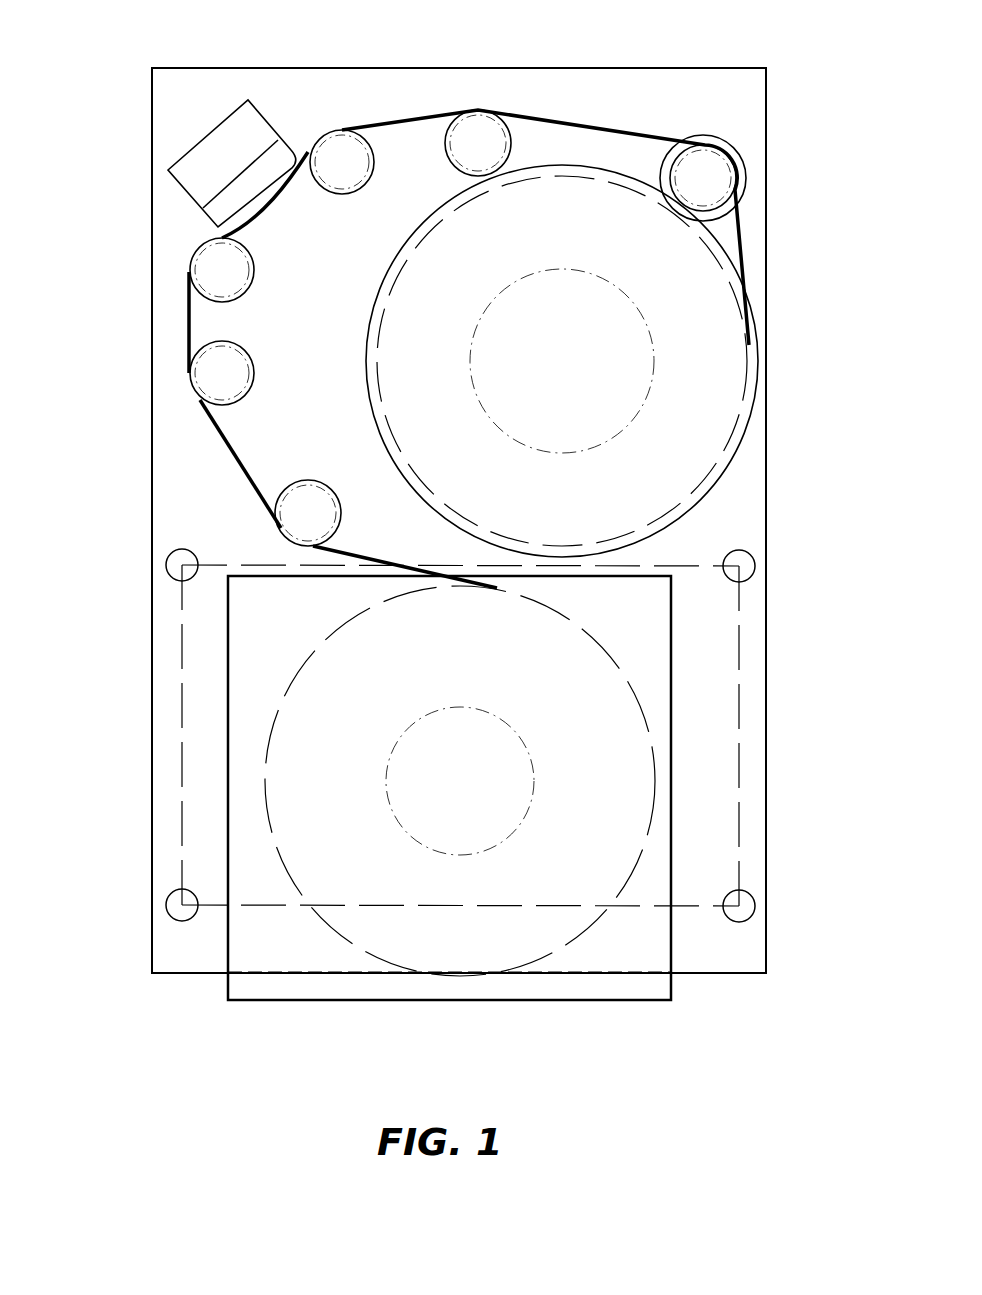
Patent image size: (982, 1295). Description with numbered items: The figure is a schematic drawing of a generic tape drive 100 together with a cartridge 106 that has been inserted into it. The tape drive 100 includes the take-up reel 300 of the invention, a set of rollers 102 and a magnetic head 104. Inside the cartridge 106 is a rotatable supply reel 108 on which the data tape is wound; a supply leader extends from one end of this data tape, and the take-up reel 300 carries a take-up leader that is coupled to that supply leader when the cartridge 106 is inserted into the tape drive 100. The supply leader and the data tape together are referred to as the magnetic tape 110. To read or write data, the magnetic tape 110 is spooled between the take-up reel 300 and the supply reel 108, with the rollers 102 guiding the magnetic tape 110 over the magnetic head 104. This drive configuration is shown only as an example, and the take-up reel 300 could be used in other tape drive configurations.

The tape drive 100 is at (197, 1070).
The rollers 102 is at (348, 152).
The magnetic head 104 is at (213, 162).
The cartridge 106 is at (671, 805).
The supply reel 108 is at (274, 715).
The magnetic tape 110 is at (240, 453).
The take-up reel 300 is at (712, 340).